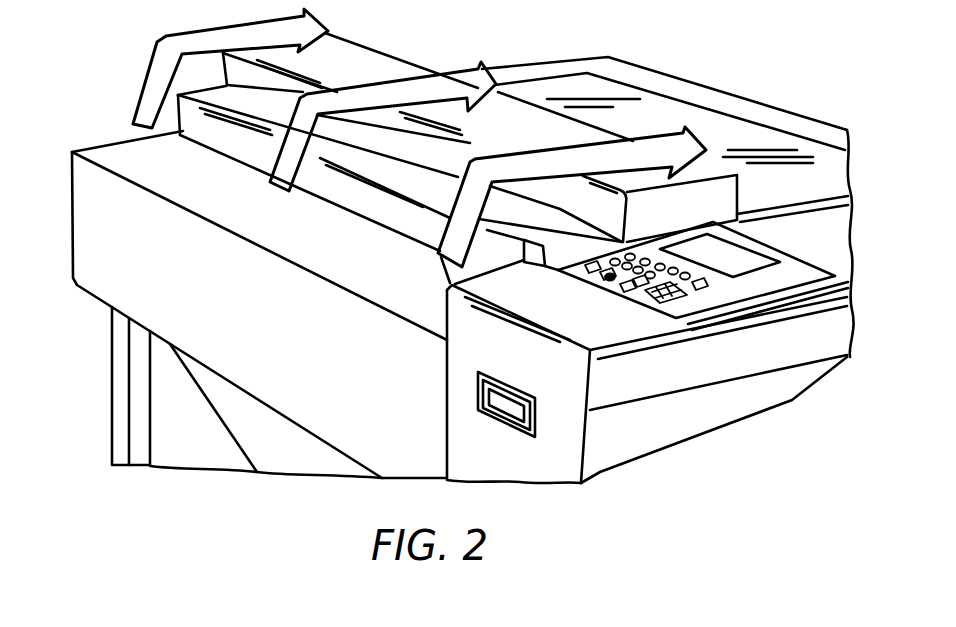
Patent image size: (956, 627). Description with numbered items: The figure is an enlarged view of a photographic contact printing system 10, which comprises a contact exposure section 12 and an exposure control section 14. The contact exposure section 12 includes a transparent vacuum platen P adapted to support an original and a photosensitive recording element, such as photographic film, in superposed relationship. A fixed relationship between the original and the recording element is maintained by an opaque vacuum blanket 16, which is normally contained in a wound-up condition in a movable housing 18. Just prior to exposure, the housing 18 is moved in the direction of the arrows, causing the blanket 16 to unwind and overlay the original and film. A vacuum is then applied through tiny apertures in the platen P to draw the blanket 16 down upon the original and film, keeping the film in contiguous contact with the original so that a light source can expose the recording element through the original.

The photographic contact printing system 10 is at (692, 62).
The contact exposure section 12 is at (98, 280).
The exposure control section 14 is at (718, 407).
The opaque vacuum blanket 16 is at (367, 203).
The movable housing 18 is at (375, 68).
The transparent vacuum platen P is at (738, 132).